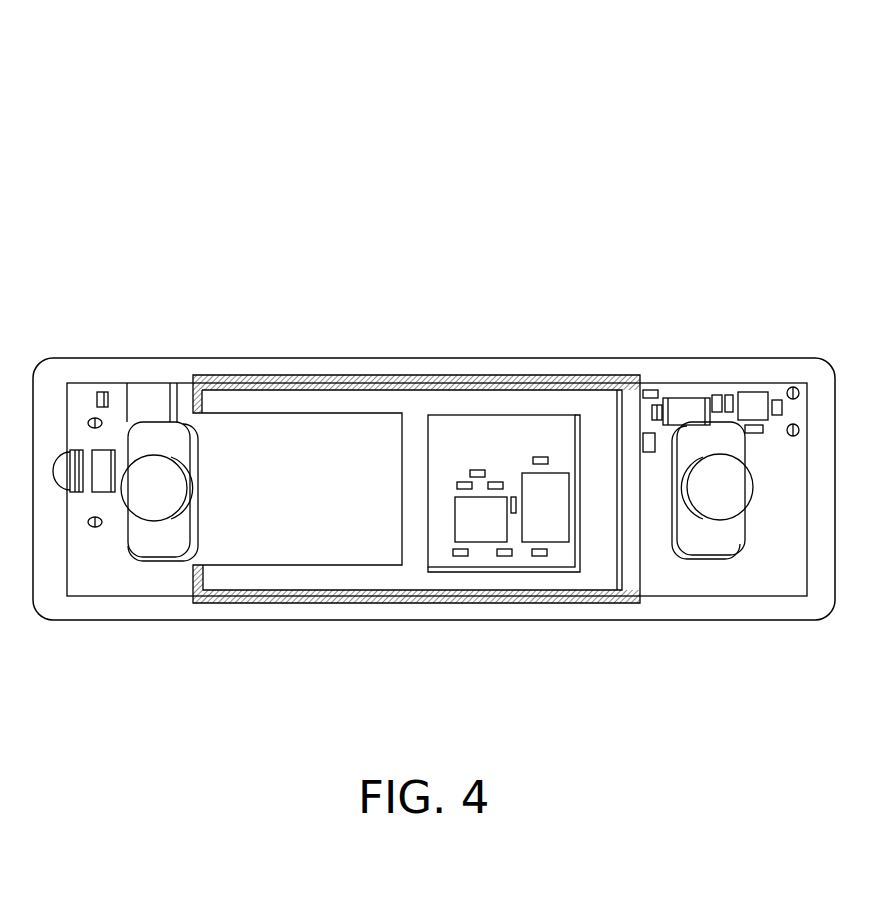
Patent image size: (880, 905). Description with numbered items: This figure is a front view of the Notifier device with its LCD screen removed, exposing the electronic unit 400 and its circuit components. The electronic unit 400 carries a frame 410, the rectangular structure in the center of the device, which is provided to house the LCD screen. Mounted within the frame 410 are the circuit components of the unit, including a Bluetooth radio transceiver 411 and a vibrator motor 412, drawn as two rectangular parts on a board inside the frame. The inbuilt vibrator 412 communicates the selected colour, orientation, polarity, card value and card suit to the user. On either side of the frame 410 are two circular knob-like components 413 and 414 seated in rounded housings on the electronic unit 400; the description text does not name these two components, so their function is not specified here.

The electronic unit 400 is at (682, 173).
The frame 410 is at (433, 398).
The Bluetooth radio transceiver 411 is at (473, 527).
The vibrator motor 412 is at (547, 527).
The right knob 413 is at (720, 513).
The left knob 414 is at (152, 515).